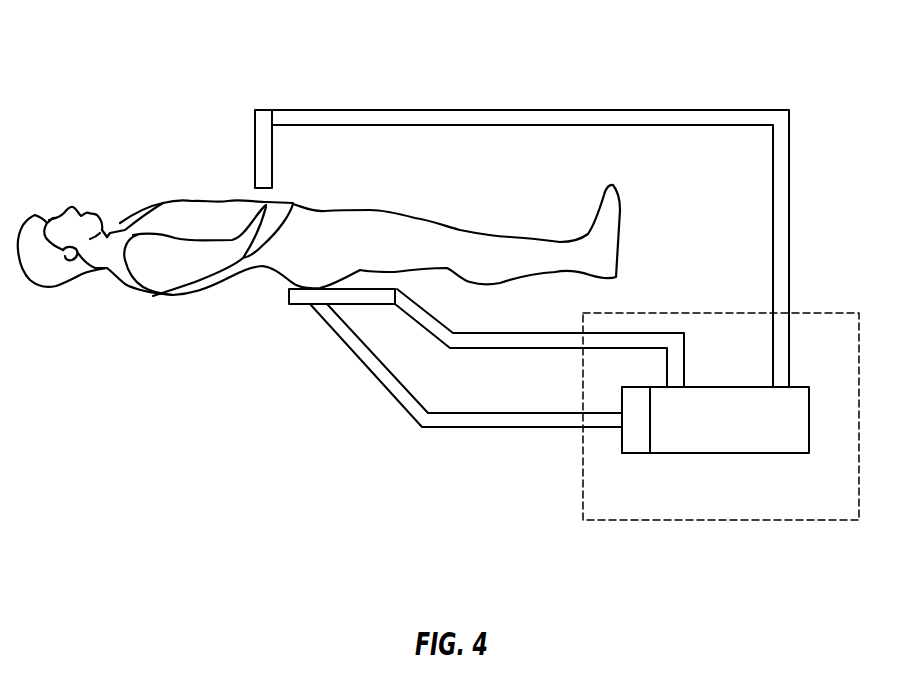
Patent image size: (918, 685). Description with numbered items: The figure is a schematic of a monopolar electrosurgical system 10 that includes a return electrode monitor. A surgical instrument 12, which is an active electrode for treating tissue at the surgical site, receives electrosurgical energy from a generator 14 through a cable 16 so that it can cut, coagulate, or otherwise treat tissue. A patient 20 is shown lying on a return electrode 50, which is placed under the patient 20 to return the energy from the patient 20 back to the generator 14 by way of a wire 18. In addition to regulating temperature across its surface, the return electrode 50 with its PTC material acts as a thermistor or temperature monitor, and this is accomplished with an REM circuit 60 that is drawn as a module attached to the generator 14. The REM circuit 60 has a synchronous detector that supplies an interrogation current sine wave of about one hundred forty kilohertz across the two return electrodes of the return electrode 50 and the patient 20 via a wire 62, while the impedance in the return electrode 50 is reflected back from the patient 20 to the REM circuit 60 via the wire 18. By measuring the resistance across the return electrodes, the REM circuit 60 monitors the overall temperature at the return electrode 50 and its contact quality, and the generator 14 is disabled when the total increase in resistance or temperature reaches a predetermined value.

The monopolar electrosurgical system 10 is at (293, 64).
The surgical instrument 12 is at (255, 162).
The generator 14 is at (778, 454).
The cable 16 is at (617, 110).
The wire 18 is at (498, 350).
The patient 20 is at (157, 275).
The return electrode 50 is at (298, 306).
The REM circuit 60 is at (637, 455).
The wire 62 is at (382, 383).